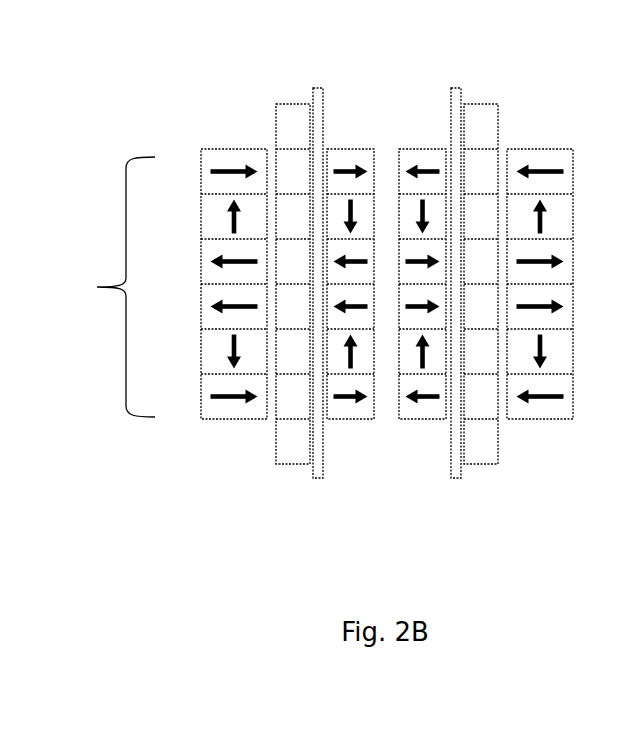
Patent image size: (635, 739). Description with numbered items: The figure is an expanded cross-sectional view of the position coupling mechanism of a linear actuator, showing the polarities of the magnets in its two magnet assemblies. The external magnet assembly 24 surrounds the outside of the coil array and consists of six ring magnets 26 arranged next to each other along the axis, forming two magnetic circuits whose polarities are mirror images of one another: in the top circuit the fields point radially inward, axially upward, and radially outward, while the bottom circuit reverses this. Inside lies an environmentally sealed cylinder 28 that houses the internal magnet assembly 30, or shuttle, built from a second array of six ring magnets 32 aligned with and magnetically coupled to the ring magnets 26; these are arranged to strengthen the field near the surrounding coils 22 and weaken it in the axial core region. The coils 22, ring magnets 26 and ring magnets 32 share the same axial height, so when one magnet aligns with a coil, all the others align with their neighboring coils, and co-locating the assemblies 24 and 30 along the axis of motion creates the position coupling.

The coils 22 is at (489, 102).
The external magnet assembly 24 is at (111, 287).
The ring magnets 26 is at (232, 148).
The environmentally sealed cylinder 28 is at (547, 125).
The internal magnet assembly 30 is at (423, 106).
The ring magnets 32 is at (357, 148).